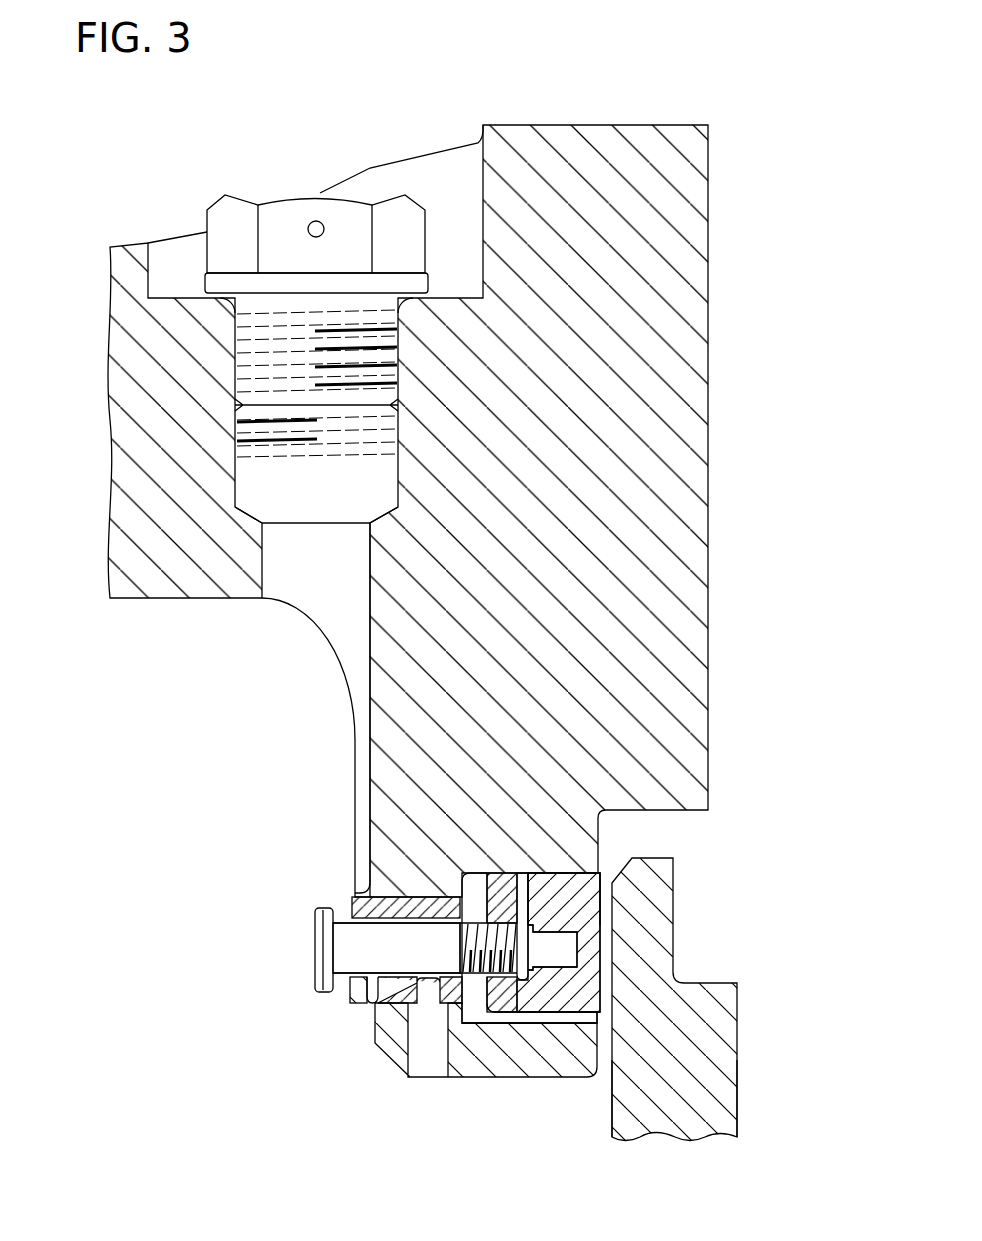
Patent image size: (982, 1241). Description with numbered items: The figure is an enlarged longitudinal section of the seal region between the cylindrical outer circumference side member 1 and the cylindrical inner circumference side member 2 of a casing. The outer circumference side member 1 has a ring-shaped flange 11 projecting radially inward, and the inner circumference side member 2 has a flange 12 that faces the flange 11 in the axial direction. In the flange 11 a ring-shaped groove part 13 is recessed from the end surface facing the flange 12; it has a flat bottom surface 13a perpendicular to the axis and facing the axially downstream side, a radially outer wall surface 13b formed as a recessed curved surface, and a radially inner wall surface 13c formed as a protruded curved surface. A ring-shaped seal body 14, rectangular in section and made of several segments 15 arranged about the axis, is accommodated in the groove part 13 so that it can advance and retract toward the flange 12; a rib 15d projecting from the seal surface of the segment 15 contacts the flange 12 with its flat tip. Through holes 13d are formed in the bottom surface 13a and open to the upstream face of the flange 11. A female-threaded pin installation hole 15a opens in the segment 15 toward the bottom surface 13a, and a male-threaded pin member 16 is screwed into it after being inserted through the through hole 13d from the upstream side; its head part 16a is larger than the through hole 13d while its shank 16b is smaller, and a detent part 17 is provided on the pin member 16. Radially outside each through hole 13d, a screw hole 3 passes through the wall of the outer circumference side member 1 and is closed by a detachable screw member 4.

The outer circumference side member 1 is at (670, 309).
The inner circumference side member 2 is at (674, 1114).
The screw hole 3 is at (238, 372).
The screw member 4 is at (283, 218).
The flange 11 is at (381, 1059).
The flange 12 is at (678, 911).
The groove part 13 is at (503, 891).
The bottom surface 13a is at (478, 1005).
The wall surface 13b is at (538, 891).
The wall surface 13c is at (545, 1022).
The through hole 13d is at (360, 930).
The seal body 14 is at (558, 942).
The segment 15 is at (606, 895).
The pin installation hole 15a is at (508, 962).
The rib 15d is at (548, 1022).
The pin member 16 is at (311, 952).
The head part 16a is at (326, 979).
The shank 16b is at (372, 962).
The detent part 17 is at (560, 880).